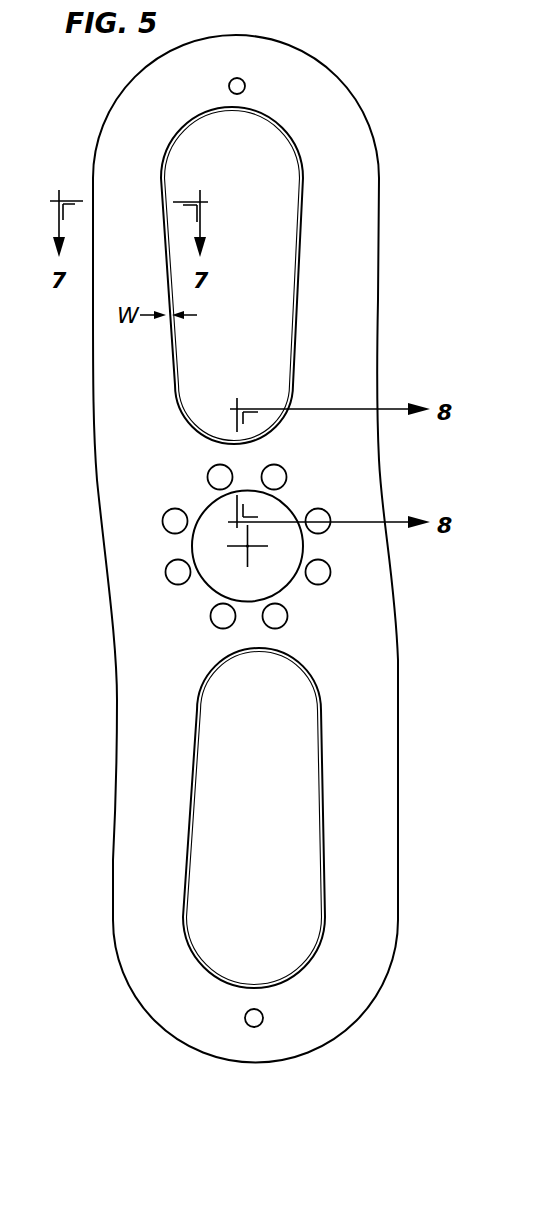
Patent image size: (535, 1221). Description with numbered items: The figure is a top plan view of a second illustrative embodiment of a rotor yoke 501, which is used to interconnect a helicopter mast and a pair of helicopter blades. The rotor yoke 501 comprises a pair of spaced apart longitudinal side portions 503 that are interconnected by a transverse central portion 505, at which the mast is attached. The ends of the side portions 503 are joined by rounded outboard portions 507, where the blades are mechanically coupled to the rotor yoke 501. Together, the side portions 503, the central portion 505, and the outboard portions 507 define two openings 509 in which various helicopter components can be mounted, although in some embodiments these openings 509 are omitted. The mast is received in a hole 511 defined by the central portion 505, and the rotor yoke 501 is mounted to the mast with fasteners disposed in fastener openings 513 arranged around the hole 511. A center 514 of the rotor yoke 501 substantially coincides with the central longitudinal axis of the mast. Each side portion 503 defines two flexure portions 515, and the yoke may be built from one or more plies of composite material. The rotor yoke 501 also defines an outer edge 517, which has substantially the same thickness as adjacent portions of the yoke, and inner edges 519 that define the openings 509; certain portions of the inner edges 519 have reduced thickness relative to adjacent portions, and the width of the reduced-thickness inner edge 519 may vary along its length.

The rotor yoke 501 is at (261, 544).
The longitudinal side portions 503 is at (363, 236).
The transverse central portion 505 is at (367, 504).
The outboard portions 507 is at (255, 68).
The openings 509 is at (262, 298).
The hole 511 is at (223, 578).
The fastener openings 513 is at (220, 478).
The center 514 is at (248, 560).
The flexure portions 515 is at (382, 262).
The outer edge 517 is at (148, 63).
The inner edges 519 is at (300, 209).